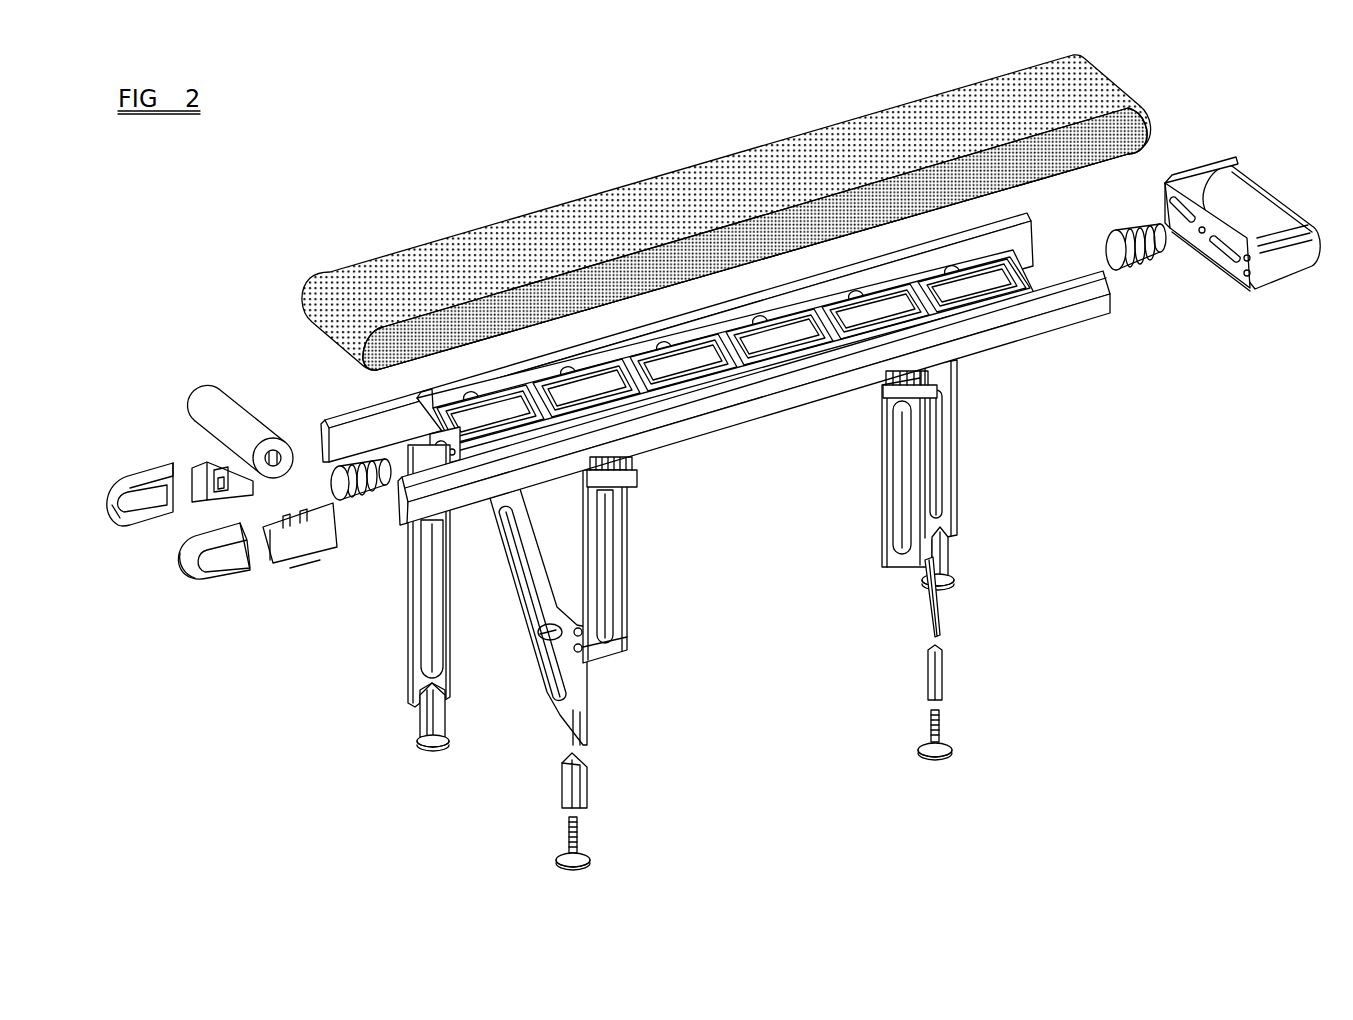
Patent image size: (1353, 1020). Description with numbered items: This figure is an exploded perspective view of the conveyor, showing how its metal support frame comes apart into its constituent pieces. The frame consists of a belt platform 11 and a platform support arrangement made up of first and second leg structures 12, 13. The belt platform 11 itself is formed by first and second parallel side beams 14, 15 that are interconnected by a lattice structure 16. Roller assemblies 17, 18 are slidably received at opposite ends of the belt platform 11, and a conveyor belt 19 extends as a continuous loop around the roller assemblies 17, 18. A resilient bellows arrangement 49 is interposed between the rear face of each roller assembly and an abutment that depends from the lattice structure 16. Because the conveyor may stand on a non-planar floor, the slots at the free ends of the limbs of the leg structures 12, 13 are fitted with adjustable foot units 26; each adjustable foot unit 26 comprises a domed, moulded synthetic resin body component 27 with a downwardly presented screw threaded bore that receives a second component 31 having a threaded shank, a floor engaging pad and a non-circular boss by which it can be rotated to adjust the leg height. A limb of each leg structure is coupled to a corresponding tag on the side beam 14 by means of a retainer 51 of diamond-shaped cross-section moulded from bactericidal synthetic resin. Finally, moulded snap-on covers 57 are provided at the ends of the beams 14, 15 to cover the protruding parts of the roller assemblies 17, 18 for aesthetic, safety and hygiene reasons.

The belt platform 11 is at (726, 479).
The first leg structure 12 is at (595, 617).
The second leg structure 13 is at (908, 588).
The first side beam 14 is at (700, 455).
The second side beam 15 is at (392, 420).
The lattice structure 16 is at (1015, 262).
The roller assembly 17 is at (278, 589).
The roller assembly 18 is at (1227, 316).
The conveyor belt 19 is at (512, 245).
The adjustable foot unit 26 is at (444, 718).
The first moulded synthetic resin body component 27 is at (590, 790).
The second component 31 is at (584, 850).
The resilient bellows arrangement 49 is at (348, 500).
The retainer 51 is at (637, 470).
The snap-on cover 57 is at (180, 574).